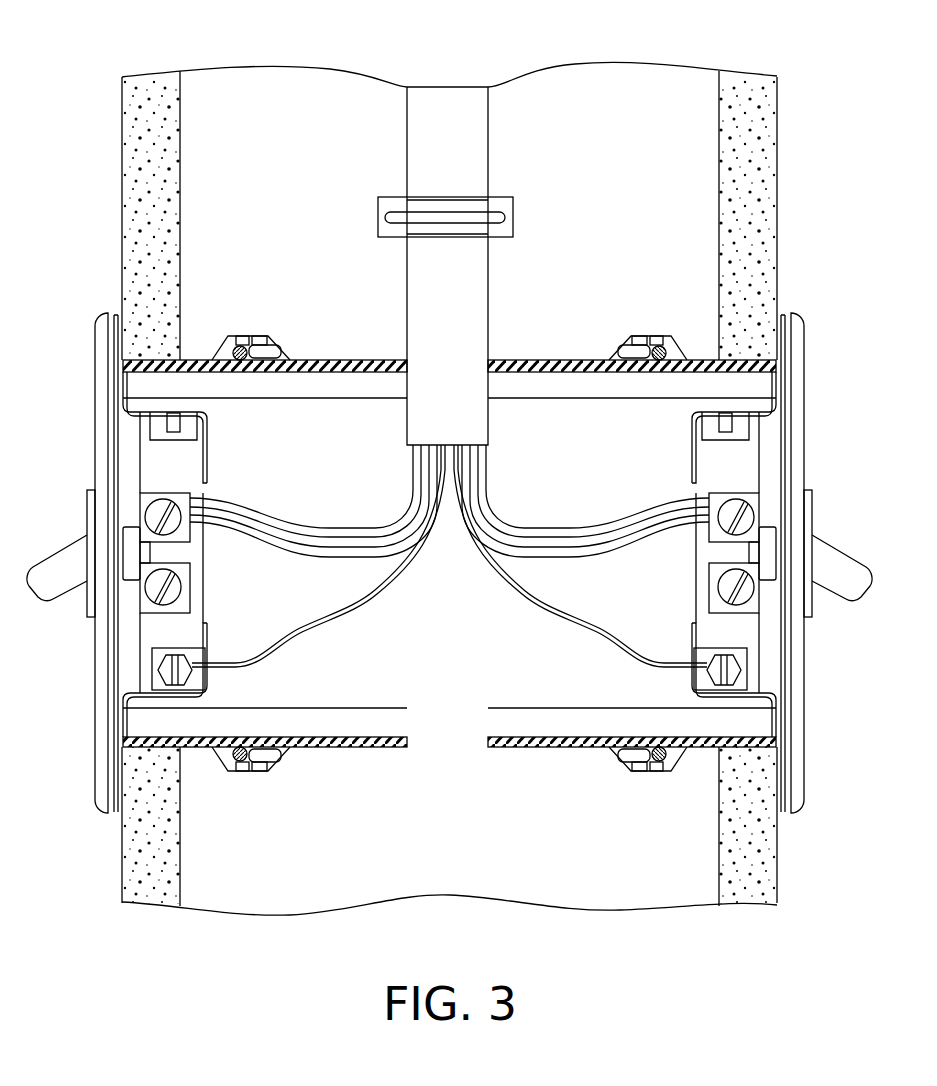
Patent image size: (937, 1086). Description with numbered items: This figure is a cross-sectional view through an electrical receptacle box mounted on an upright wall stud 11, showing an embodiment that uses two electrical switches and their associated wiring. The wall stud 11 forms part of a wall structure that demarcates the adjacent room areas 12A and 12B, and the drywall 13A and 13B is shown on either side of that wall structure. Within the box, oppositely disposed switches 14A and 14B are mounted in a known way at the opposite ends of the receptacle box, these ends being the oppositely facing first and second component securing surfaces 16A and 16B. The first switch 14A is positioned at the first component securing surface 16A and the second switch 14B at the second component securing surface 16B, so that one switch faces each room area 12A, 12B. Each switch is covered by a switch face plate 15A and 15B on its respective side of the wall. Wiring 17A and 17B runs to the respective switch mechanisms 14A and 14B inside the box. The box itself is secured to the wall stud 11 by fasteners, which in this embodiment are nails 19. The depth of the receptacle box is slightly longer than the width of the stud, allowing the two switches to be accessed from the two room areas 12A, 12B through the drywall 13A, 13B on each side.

The wall stud 11 is at (600, 240).
The room area 12A is at (48, 206).
The room area 12B is at (817, 206).
The drywall 13A is at (151, 100).
The drywall 13B is at (748, 100).
The switch 14A is at (240, 471).
The switch 14B is at (659, 471).
The switch face plate 15A is at (100, 433).
The switch face plate 15B is at (799, 433).
The first component securing surface 16A is at (125, 765).
The second component securing surface 16B is at (774, 765).
The wiring 17A is at (345, 607).
The wiring 17B is at (560, 610).
The nails 19 is at (236, 348).